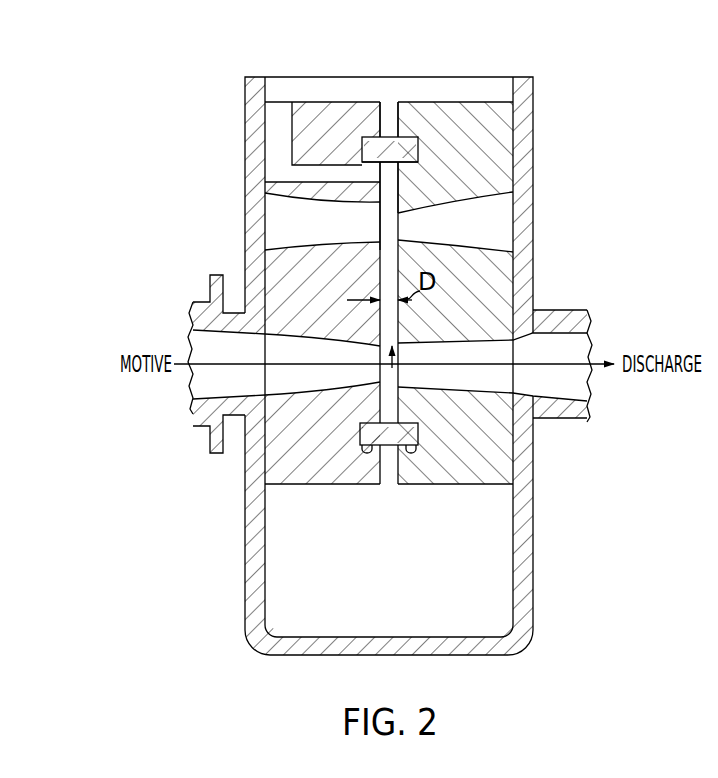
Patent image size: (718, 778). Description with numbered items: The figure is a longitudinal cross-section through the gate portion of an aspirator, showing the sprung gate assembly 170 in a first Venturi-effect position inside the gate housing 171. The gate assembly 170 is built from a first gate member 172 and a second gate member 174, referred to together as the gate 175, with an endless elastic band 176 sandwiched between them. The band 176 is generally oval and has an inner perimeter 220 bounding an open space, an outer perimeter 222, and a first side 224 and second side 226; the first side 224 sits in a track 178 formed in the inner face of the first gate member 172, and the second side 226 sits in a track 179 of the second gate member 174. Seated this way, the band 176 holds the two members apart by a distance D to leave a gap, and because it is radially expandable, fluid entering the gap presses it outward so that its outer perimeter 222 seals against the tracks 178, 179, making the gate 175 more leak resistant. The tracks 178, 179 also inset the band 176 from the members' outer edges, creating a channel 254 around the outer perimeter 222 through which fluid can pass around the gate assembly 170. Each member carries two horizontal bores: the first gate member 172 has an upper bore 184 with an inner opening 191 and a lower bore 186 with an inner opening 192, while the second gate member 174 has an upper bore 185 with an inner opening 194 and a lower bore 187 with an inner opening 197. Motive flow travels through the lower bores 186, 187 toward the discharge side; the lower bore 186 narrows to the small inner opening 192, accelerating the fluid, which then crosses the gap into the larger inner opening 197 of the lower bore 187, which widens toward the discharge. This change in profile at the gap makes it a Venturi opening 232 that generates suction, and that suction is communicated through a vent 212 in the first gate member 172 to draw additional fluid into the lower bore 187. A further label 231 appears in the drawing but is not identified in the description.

The gate assembly 170 is at (230, 603).
The gate housing 171 is at (533, 610).
The first gate member 172 is at (303, 104).
The second gate member 174 is at (453, 102).
The gate 175 is at (300, 497).
The endless elastic band 176 is at (418, 146).
The track 178 is at (363, 449).
The track 179 is at (415, 449).
The upper bore 184 is at (277, 234).
The upper bore 185 is at (503, 238).
The lower bore 186 is at (282, 352).
The lower bore 187 is at (503, 348).
The inner opening 191 is at (373, 217).
The inner opening 192 is at (373, 350).
The inner opening 194 is at (408, 213).
The inner opening 197 is at (408, 347).
The vent 212 is at (277, 137).
The inner perimeter 220 is at (390, 163).
The outer perimeter 222 is at (387, 137).
The first side 224 is at (360, 435).
The second side 226 is at (418, 435).
The rod first portion 231 is at (383, 187).
The Venturi opening 232 is at (393, 369).
The channel 254 is at (395, 484).